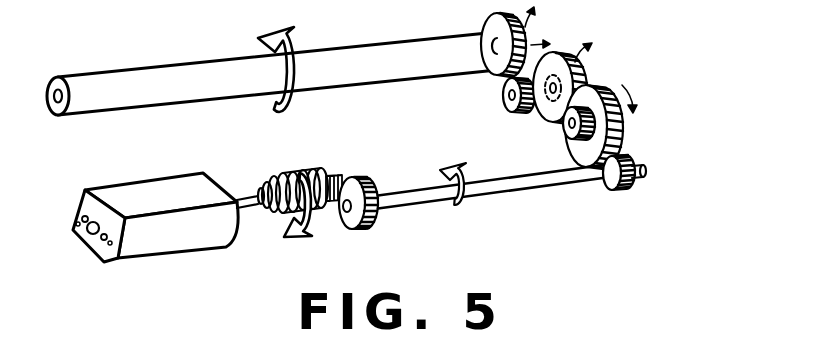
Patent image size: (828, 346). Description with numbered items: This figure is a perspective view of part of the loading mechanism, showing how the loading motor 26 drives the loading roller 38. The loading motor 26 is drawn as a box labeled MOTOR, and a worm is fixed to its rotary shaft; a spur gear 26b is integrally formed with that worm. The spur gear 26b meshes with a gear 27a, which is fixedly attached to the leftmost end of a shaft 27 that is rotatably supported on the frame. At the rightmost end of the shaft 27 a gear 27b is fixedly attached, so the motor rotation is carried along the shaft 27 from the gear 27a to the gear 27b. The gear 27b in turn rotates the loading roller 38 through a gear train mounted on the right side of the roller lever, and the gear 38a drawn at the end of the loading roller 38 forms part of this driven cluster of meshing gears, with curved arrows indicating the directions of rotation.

The loading roller 38 is at (185, 73).
The gear on shaft 38 38a is at (530, 43).
The loading motor 26 is at (155, 195).
The spur gear 26b is at (328, 175).
The gear 27a is at (368, 178).
The shaft 27 is at (500, 188).
The gear 27b is at (625, 188).